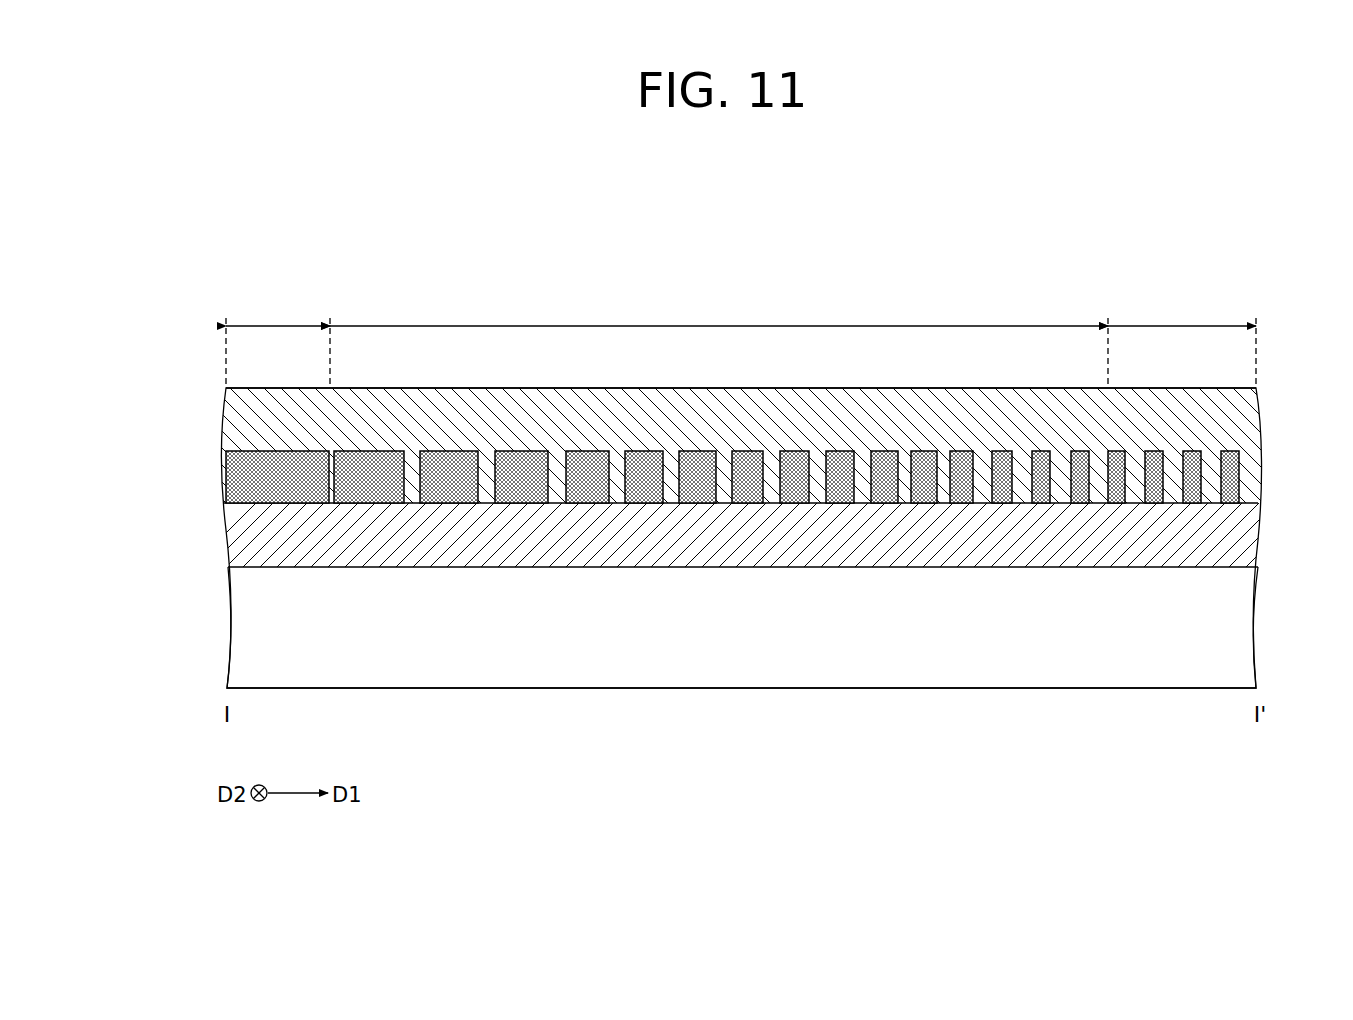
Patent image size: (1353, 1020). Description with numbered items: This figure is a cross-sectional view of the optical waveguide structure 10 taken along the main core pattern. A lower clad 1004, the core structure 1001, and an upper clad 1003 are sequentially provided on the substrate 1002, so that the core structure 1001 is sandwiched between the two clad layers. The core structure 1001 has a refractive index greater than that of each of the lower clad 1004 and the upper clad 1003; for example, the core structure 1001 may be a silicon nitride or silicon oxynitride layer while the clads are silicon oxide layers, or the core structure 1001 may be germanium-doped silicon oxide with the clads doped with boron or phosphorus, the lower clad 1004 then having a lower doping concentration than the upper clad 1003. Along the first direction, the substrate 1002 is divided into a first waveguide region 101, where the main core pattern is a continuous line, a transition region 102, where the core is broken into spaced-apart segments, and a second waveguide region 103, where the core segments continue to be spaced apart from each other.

The optical waveguide structure 10 is at (1244, 259).
The first waveguide region 101 is at (278, 342).
The transition region 102 is at (719, 342).
The second waveguide region 103 is at (1182, 342).
The core structure 1001 is at (236, 479).
The substrate 1002 is at (243, 600).
The upper clad 1003 is at (243, 421).
The lower clad 1004 is at (243, 534).